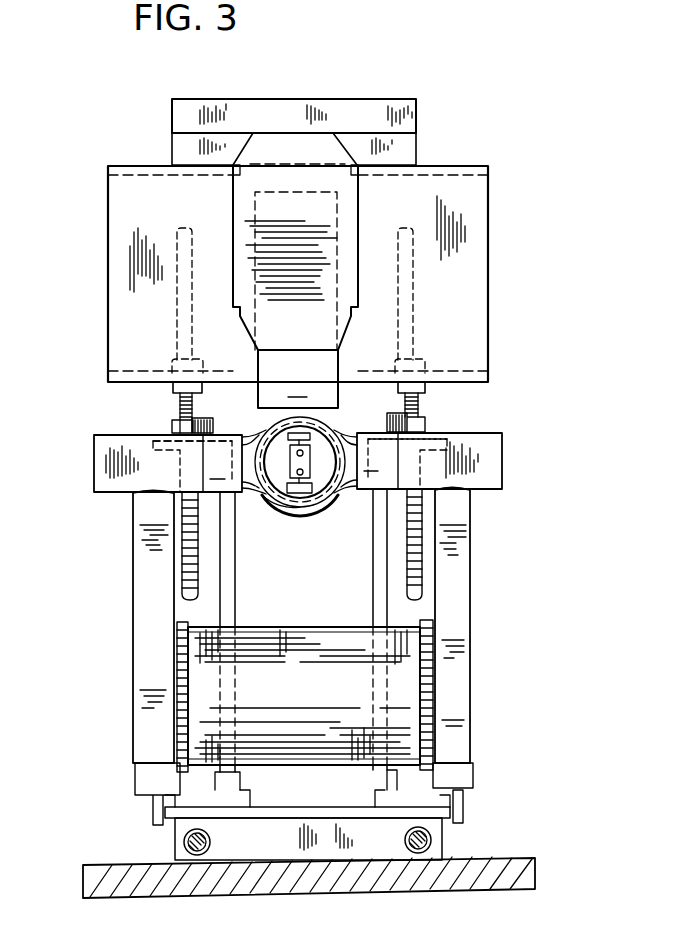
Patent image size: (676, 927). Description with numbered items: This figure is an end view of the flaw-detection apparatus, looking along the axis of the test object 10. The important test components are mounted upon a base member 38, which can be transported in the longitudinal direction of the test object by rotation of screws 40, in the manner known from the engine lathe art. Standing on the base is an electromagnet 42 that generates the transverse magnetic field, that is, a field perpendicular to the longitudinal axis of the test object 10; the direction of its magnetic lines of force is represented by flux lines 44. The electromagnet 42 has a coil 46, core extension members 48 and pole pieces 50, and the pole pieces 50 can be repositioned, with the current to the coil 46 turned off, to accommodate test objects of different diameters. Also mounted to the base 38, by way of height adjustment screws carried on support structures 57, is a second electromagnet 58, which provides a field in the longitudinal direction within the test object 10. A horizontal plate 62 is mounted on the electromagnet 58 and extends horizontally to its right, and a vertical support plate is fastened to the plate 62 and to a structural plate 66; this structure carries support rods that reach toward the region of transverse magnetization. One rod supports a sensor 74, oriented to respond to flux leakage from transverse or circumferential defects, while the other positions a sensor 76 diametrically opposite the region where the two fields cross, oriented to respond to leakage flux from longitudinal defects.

The test object 10 is at (310, 508).
The base member 38 is at (488, 858).
The screws 40 is at (208, 842).
The electromagnet 42 is at (303, 674).
The flux lines 44 is at (338, 492).
The coil 46 is at (318, 627).
The core extension members 48 is at (145, 640).
The pole pieces 50 is at (98, 462).
The support structures 57 is at (153, 440).
The electromagnet 58 is at (337, 232).
The horizontal plate 62 is at (392, 97).
The structural plate 66 is at (420, 149).
The sensor 74 is at (275, 433).
The sensor 76 is at (273, 500).